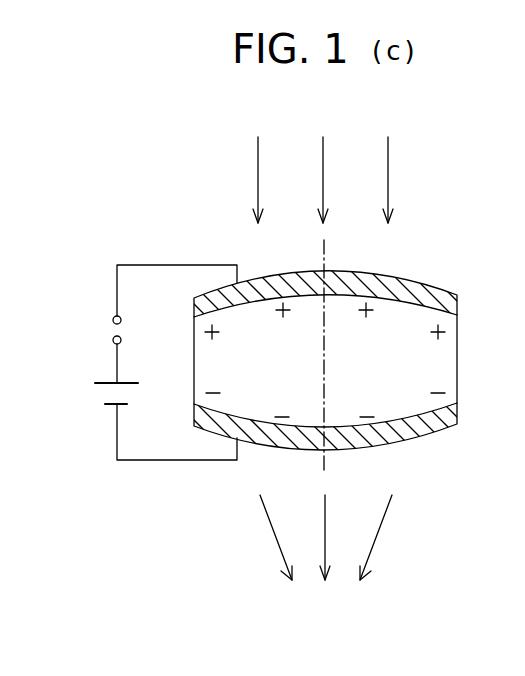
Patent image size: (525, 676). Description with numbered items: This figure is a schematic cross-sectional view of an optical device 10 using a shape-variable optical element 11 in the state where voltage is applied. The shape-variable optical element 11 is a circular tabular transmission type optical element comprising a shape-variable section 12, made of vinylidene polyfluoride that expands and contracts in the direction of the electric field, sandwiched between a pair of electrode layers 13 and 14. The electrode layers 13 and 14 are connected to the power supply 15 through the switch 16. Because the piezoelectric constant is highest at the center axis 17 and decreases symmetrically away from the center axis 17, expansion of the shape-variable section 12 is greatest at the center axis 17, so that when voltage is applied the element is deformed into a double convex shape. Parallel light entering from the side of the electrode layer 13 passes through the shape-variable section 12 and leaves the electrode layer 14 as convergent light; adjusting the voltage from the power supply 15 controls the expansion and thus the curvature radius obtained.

The optical device 10 is at (210, 185).
The shape-variable optical element 11 is at (427, 267).
The shape-variable section 12 is at (452, 357).
The electrode layer 13 is at (458, 302).
The electrode layer 14 is at (458, 417).
The power supply 15 is at (98, 396).
The switch 16 is at (112, 327).
The center axis 17 is at (325, 252).